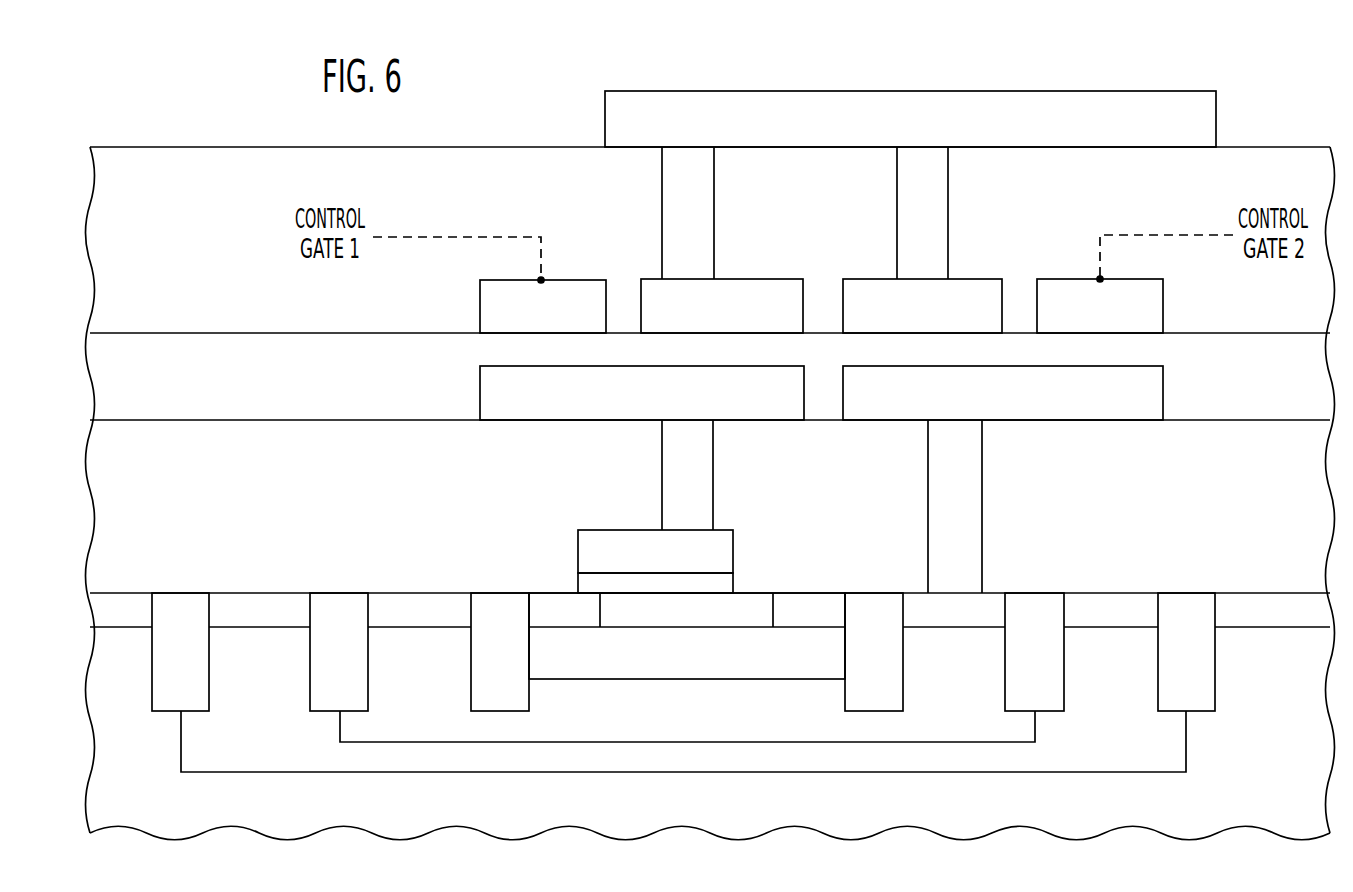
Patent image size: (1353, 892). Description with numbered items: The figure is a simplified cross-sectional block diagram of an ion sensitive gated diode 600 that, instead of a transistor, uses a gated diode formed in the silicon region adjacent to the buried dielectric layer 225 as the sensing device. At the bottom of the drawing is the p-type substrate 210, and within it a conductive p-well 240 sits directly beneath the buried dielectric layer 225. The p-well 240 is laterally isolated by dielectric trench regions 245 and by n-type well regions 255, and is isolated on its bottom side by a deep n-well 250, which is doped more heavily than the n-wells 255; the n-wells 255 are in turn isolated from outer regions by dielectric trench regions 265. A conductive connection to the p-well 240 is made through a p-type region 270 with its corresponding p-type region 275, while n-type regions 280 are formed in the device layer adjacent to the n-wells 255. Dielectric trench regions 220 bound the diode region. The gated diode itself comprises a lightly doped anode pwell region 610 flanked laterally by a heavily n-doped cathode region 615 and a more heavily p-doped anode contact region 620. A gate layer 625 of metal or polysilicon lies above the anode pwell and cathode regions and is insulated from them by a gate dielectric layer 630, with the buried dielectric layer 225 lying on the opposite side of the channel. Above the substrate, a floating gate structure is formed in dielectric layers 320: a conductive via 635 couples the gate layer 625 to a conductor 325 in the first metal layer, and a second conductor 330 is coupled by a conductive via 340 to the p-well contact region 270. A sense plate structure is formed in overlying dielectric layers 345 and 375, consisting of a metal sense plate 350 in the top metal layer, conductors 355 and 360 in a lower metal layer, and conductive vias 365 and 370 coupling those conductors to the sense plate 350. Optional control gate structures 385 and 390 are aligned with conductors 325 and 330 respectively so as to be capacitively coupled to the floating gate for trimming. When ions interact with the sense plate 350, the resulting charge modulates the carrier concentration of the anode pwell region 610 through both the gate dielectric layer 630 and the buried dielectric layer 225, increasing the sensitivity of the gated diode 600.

The ion sensitive gated diode 600 is at (973, 49).
The substrate 210 is at (1275, 804).
The dielectric trench regions 220 is at (513, 672).
The buried dielectric layer 225 is at (741, 666).
The p-well 240 is at (706, 722).
The dielectric trench regions 245 is at (356, 672).
The deep n-well 250 is at (945, 763).
The n-type well regions 255 is at (274, 690).
The dielectric trench regions 265 is at (196, 672).
The p-type region 270 is at (957, 617).
The p-type region 275 is at (420, 602).
The n-type regions 280 is at (256, 602).
The dielectric layers 320 is at (166, 519).
The conductor 325 is at (649, 406).
The conductor 330 is at (1020, 406).
The conductive via 340 is at (981, 465).
The dielectric layer 345 is at (166, 389).
The sense plate 350 is at (894, 127).
The conductor 355 is at (738, 317).
The conductor 360 is at (938, 317).
The conductive via 365 is at (714, 197).
The conductive via 370 is at (948, 197).
The dielectric layer 375 is at (166, 244).
The control gate structure 385 is at (559, 317).
The control gate structure 390 is at (1116, 317).
The anode pwell region 610 is at (640, 617).
The cathode region 615 is at (550, 601).
The anode contact region 620 is at (810, 617).
The gate layer 625 is at (674, 561).
The gate dielectric layer 630 is at (727, 587).
The conductive via 635 is at (713, 472).